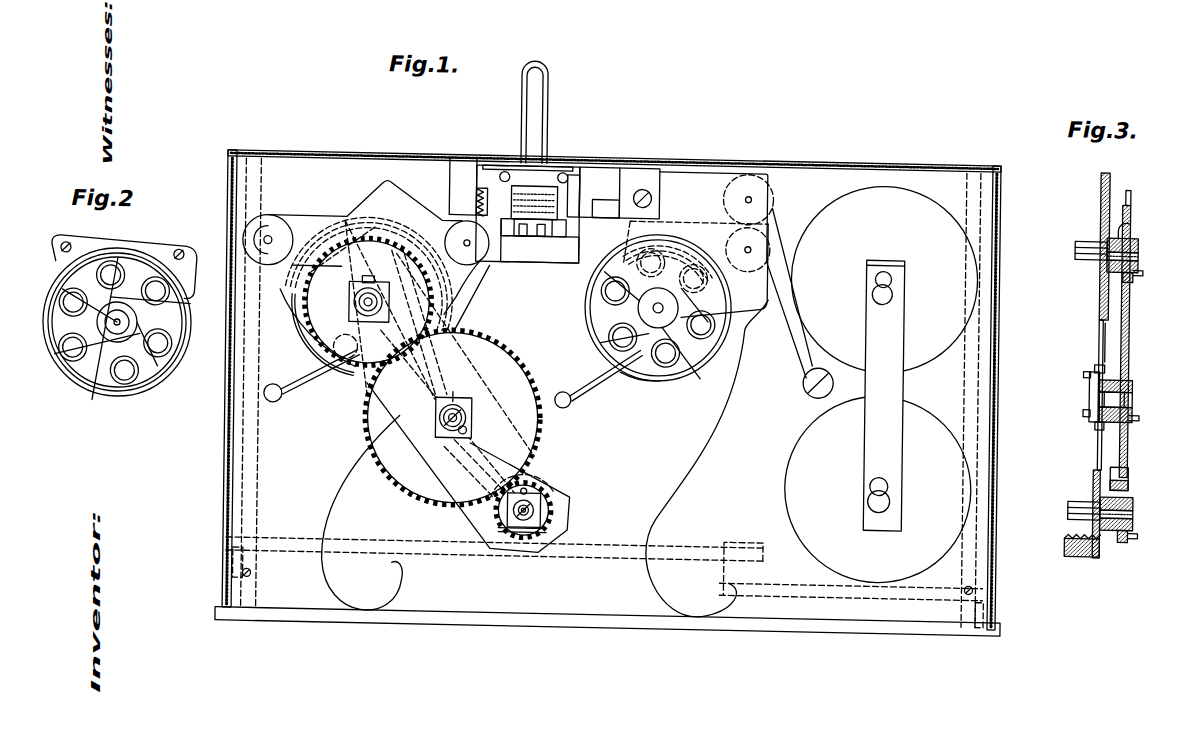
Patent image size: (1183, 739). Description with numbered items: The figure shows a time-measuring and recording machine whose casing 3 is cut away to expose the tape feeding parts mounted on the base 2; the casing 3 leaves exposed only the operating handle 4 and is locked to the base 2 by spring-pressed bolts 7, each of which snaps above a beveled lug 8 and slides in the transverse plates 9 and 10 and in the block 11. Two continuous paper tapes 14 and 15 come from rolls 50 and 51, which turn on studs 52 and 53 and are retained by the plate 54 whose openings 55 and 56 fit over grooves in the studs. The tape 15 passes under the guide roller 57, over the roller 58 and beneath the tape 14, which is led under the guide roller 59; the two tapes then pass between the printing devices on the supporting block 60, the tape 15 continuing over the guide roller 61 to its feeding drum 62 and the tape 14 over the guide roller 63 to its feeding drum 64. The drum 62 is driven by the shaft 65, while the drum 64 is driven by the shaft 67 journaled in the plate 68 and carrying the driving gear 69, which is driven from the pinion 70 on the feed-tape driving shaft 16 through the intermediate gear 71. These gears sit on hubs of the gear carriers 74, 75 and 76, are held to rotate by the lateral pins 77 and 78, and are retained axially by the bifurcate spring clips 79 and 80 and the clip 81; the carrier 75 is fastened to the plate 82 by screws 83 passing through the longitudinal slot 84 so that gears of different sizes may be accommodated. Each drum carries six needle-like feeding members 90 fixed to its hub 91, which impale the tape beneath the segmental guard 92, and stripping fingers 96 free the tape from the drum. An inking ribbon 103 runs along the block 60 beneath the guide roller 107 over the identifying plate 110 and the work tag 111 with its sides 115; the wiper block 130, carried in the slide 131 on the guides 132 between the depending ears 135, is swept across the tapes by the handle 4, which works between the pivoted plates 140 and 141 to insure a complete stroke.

In FIG. 1, the base 2 is at (640, 630).
In FIG. 1, the casing 3 is at (320, 228).
In FIG. 1, the operating handle 4 is at (518, 101).
In FIG. 1, the spring-pressed bolts 7 is at (428, 558).
In FIG. 1, the beveled lug 8 is at (248, 582).
In FIG. 1, the transverse plate 9 is at (252, 455).
In FIG. 1, the transverse plate 10 is at (964, 371).
In FIG. 1, the block 11 is at (765, 572).
In FIG. 1, the paper tape 14 is at (291, 222).
In FIG. 1, the paper tape 15 is at (488, 272).
In FIG. 1, the feed-tape driving shaft 16 is at (522, 545).
In FIG. 3, the feed-tape driving shaft 16 is at (1080, 503).
In FIG. 1, the roll 50 is at (912, 207).
In FIG. 1, the roll 51 is at (922, 402).
In FIG. 1, the stud 52 is at (891, 269).
In FIG. 1, the stud 53 is at (889, 477).
In FIG. 1, the plate 54 is at (895, 329).
In FIG. 1, the opening 55 is at (892, 289).
In FIG. 1, the opening 56 is at (891, 499).
In FIG. 1, the guide roller 57 is at (808, 392).
In FIG. 1, the roller 58 is at (760, 246).
In FIG. 1, the guide roller 59 is at (768, 196).
In FIG. 1, the supporting block 60 is at (556, 255).
In FIG. 1, the guide roller 61 is at (455, 233).
In FIG. 1, the feeding drum 62 is at (640, 382).
In FIG. 1, the guide roller 63 is at (268, 230).
In FIG. 1, the feeding drum 64 is at (306, 350).
In FIG. 2, the feeding drum 64 is at (185, 352).
In FIG. 1, the shaft 65 is at (640, 310).
In FIG. 1, the shaft 67 is at (376, 316).
In FIG. 2, the shaft 67 is at (98, 310).
In FIG. 3, the shaft 67 is at (1080, 242).
In FIG. 1, the plate 68 is at (535, 468).
In FIG. 3, the plate 68 is at (1099, 298).
In FIG. 1, the driving gear 69 is at (410, 300).
In FIG. 3, the driving gear 69 is at (1129, 196).
In FIG. 1, the pinion 70 is at (553, 510).
In FIG. 3, the pinion 70 is at (1130, 500).
In FIG. 1, the intermediate gear 71 is at (521, 378).
In FIG. 3, the intermediate gear 71 is at (1129, 342).
In FIG. 1, the gear carrier 74 is at (490, 470).
In FIG. 3, the gear carrier 74 is at (1095, 552).
In FIG. 1, the gear carrier 75 is at (472, 421).
In FIG. 3, the gear carrier 75 is at (1133, 384).
In FIG. 1, the gear carrier 76 is at (348, 308).
In FIG. 3, the gear carrier 76 is at (1139, 243).
In FIG. 1, the lateral pin 77 is at (545, 492).
In FIG. 3, the lateral pin 77 is at (1130, 472).
In FIG. 1, the lateral pin 78 is at (356, 284).
In FIG. 3, the lateral pin 78 is at (1124, 226).
In FIG. 1, the bifurcate spring clip 79 is at (505, 530).
In FIG. 3, the bifurcate spring clip 79 is at (1135, 539).
In FIG. 1, the bifurcate spring clip 80 is at (381, 284).
In FIG. 3, the bifurcate spring clip 80 is at (1138, 275).
In FIG. 1, the clip 81 is at (468, 412).
In FIG. 3, the clip 81 is at (1138, 420).
In FIG. 3, the plate 82 is at (1090, 396).
In FIG. 3, the screws 83 is at (1096, 368).
In FIG. 1, the longitudinal slot 84 is at (470, 455).
In FIG. 3, the longitudinal slot 84 is at (1104, 341).
In FIG. 1, the feeding members 90 is at (604, 295).
In FIG. 2, the feeding members 90 is at (60, 310).
In FIG. 2, the hub 91 is at (110, 325).
In FIG. 1, the segmental guard 92 is at (350, 226).
In FIG. 2, the segmental guard 92 is at (113, 246).
In FIG. 1, the stripping fingers 96 is at (320, 385).
In FIG. 1, the inking ribbon 103 is at (470, 172).
In FIG. 1, the guide roller 107 is at (571, 178).
In FIG. 1, the identifying plate 110 is at (520, 240).
In FIG. 1, the work identifying tag 111 is at (542, 240).
In FIG. 1, the sides 115 is at (474, 200).
In FIG. 1, the wiper block 130 is at (646, 186).
In FIG. 1, the slide 131 is at (630, 172).
In FIG. 1, the guides 132 is at (502, 166).
In FIG. 1, the depending ears 135 is at (474, 198).
In FIG. 1, the plate 140 is at (502, 174).
In FIG. 1, the plate 141 is at (560, 174).